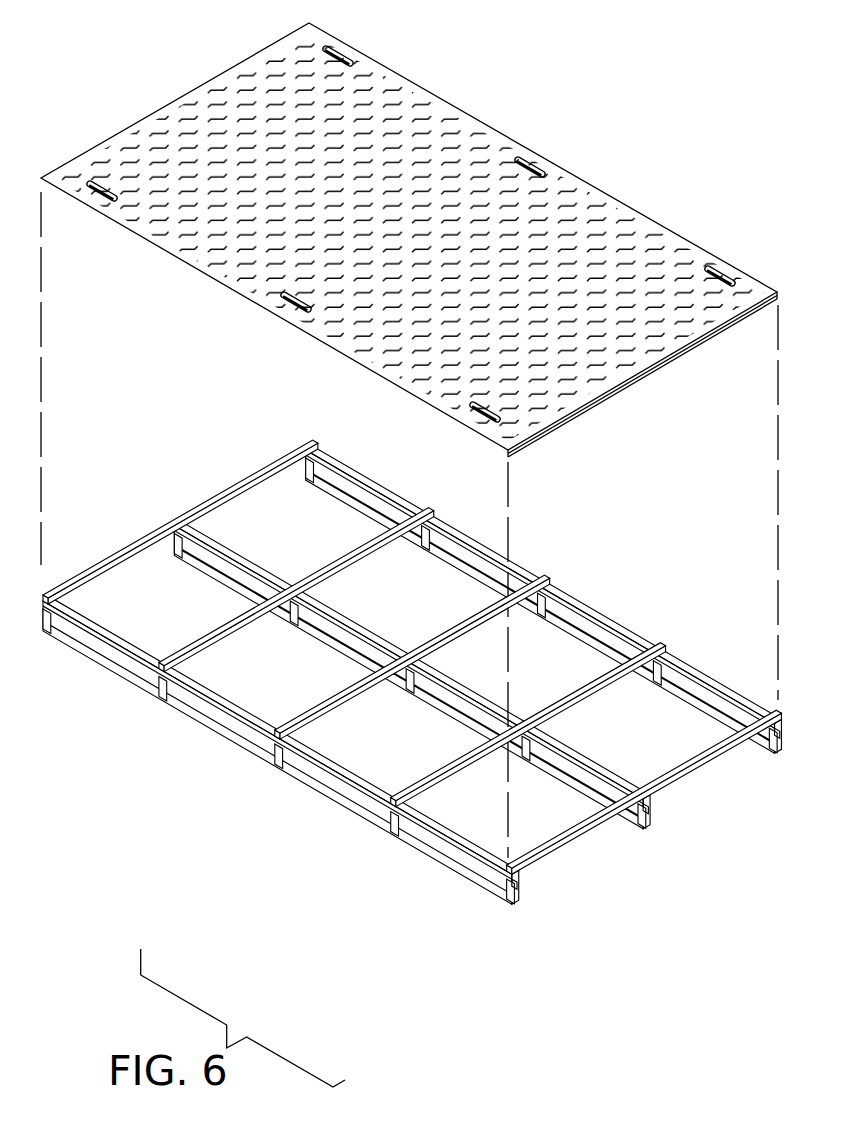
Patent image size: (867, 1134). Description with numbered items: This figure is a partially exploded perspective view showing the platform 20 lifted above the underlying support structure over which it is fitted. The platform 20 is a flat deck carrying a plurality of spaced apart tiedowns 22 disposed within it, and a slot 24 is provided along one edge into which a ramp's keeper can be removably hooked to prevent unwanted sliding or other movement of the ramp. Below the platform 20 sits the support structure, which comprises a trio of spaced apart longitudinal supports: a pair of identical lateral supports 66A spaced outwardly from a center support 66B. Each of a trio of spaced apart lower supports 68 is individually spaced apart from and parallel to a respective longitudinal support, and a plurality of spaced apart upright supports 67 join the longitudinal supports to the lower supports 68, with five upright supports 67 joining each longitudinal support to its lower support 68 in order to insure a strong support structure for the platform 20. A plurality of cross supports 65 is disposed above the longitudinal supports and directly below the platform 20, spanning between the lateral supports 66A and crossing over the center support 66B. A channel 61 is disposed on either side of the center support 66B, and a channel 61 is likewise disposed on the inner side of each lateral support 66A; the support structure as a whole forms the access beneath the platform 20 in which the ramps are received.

The platform 20 is at (628, 235).
The tiedowns 22 is at (528, 165).
The slot 24 is at (742, 296).
The channel 61 is at (789, 745).
The cross supports 65 is at (230, 486).
The lateral supports 66A is at (683, 660).
The center support 66B is at (617, 777).
The upright supports 67 is at (304, 475).
The lower supports 68 is at (720, 715).